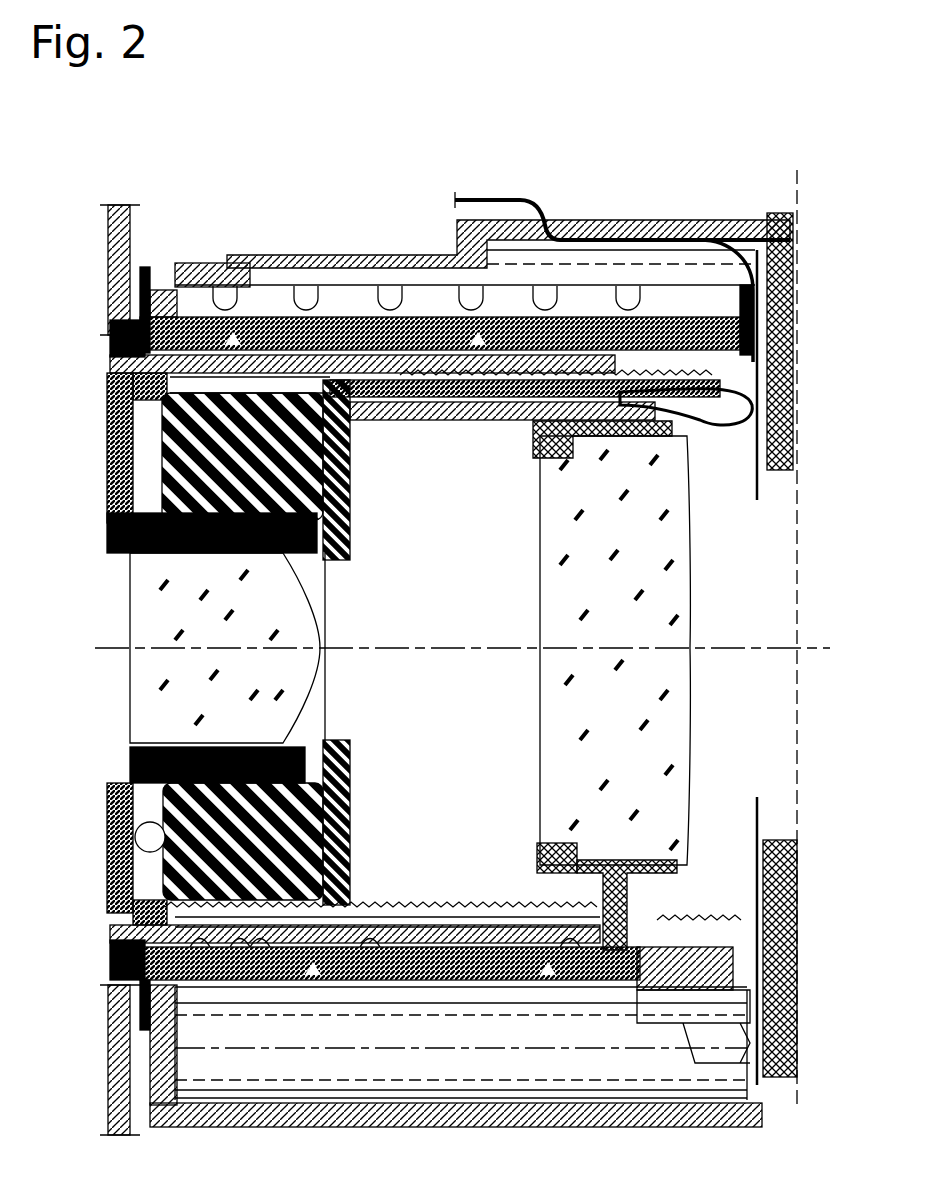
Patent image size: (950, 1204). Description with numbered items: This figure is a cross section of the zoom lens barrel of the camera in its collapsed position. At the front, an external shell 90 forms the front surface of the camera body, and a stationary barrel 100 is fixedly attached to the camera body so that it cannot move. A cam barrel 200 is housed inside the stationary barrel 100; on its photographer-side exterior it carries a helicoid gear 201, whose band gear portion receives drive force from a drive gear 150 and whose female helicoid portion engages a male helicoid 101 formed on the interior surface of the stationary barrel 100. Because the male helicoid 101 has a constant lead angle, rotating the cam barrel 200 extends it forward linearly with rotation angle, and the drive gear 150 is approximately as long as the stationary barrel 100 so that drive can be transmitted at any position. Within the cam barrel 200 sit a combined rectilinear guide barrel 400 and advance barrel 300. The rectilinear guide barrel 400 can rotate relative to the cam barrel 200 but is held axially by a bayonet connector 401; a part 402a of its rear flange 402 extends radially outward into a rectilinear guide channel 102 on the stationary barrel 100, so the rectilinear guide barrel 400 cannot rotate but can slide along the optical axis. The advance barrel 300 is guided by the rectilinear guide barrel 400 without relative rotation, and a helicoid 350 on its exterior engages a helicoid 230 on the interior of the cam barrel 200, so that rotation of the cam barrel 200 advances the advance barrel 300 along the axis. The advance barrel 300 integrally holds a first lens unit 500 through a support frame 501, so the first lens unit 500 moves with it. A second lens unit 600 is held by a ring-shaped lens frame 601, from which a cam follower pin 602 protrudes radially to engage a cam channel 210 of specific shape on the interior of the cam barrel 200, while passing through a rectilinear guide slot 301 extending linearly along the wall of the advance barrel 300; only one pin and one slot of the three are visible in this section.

The external shell 90 is at (112, 238).
The stationary barrel 100 is at (342, 268).
The male helicoid 101 is at (410, 300).
The rectilinear guide channel 102 is at (257, 280).
The drive gear 150 is at (577, 1068).
The cam barrel 200 is at (190, 300).
The helicoid gear 201 is at (672, 330).
The cam channel 210 is at (590, 345).
The helicoid 230 is at (302, 345).
The advance barrel 300 is at (377, 397).
The rectilinear guide slot 301 is at (430, 940).
The helicoid 350 is at (523, 335).
The rectilinear guide barrel 400 is at (460, 400).
The bayonet connector 401 is at (713, 340).
The flange 402 is at (733, 440).
The part of flange 402a is at (755, 275).
The first lens unit 500 is at (125, 622).
The support frame 501 is at (118, 520).
The second lens unit 600 is at (535, 555).
The lens frame 601 is at (540, 847).
The cam follower pin 602 is at (627, 945).